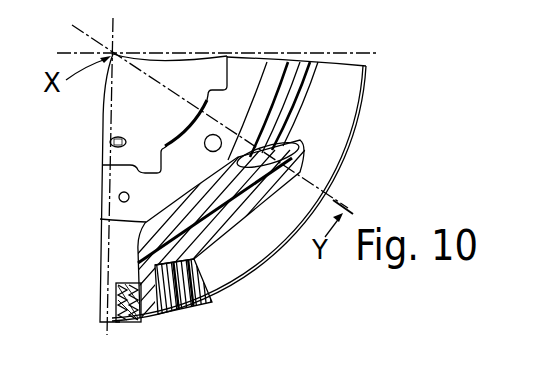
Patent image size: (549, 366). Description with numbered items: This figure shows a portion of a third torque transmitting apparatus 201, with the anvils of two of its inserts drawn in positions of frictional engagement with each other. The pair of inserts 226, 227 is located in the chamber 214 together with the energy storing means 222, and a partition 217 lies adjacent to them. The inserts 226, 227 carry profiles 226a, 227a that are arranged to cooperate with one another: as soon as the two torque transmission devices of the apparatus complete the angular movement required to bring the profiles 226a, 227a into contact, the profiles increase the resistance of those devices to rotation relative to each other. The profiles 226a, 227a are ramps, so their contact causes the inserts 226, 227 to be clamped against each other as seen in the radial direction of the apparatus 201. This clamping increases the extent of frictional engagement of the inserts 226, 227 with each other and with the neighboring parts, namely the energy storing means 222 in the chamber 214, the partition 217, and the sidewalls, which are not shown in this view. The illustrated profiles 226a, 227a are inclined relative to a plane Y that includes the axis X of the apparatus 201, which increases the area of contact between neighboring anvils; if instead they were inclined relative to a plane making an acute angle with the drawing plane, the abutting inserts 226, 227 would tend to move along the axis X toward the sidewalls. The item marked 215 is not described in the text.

The torque transmitting apparatus 201 is at (392, 63).
The chamber 214 is at (282, 223).
The energy storing element (spring) 215 is at (145, 329).
The partition 217 is at (216, 116).
The energy storing means 222 is at (182, 295).
The insert 226 is at (240, 217).
The profile 226a is at (290, 163).
The insert 227 is at (288, 97).
The profile 227a is at (282, 142).